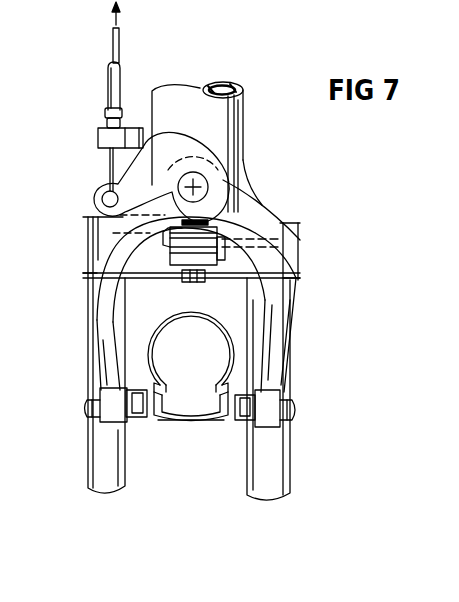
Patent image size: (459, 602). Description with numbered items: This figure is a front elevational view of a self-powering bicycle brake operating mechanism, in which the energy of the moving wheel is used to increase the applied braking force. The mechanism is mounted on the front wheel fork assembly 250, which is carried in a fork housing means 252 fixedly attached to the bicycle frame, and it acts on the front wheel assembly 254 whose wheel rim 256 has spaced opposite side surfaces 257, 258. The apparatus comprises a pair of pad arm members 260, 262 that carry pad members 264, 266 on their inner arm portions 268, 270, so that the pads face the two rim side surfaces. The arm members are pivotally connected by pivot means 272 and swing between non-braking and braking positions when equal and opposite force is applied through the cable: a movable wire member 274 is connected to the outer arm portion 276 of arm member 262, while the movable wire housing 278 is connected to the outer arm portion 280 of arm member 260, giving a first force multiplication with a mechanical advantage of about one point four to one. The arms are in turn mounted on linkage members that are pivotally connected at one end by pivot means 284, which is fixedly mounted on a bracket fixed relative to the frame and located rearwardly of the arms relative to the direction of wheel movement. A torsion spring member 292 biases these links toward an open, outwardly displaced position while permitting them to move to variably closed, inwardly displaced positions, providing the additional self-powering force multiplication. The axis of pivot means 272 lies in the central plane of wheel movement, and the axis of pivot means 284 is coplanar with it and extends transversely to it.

The front wheel fork assembly 250 is at (302, 222).
The fork housing means 252 is at (245, 150).
The front wheel assembly 254 is at (175, 427).
The wheel rim 256 is at (192, 424).
The side surface 257 is at (150, 421).
The side surface 258 is at (232, 422).
The pad arm member 260 is at (232, 172).
The pad arm member 262 is at (250, 189).
The pad member 264 is at (130, 422).
The pad member 266 is at (247, 428).
The inner arm portion 268 is at (110, 368).
The inner arm portion 270 is at (272, 372).
The pivot means 272 is at (200, 177).
The movable wire member 274 is at (120, 45).
The outer arm portion 276 is at (98, 196).
The movable wire housing 278 is at (106, 103).
The outer arm portion 280 is at (98, 140).
The pivot means 284 is at (190, 286).
The torsion spring member 292 is at (296, 278).